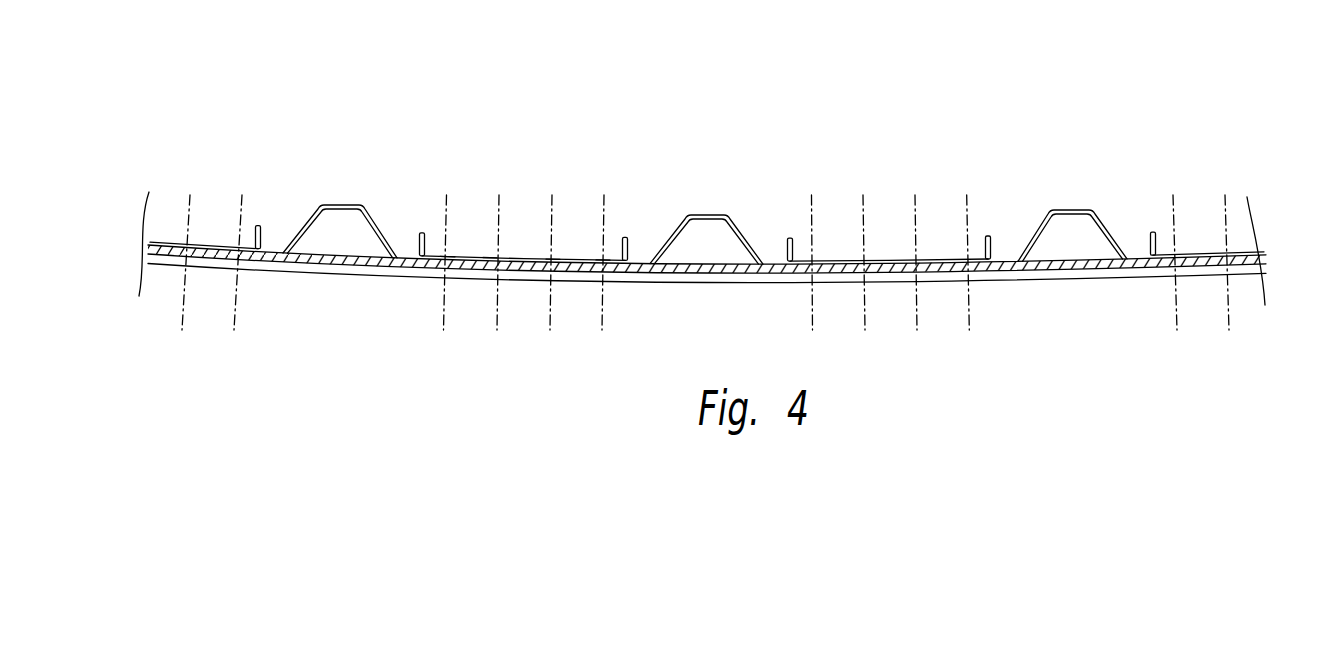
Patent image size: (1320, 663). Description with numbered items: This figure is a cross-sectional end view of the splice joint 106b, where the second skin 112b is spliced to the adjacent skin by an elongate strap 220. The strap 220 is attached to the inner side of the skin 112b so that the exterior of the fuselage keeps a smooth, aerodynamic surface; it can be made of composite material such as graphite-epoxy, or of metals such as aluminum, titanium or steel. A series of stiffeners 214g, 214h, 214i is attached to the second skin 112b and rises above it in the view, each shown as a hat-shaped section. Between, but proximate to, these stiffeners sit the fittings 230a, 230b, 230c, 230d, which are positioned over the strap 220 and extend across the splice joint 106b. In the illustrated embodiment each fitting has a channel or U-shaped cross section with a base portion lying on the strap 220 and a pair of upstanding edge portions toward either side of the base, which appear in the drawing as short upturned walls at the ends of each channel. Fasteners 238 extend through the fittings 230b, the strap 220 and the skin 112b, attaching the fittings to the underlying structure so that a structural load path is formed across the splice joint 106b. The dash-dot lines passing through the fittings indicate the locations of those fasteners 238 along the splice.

The splice joint 106b is at (388, 98).
The second skin 112b is at (1047, 277).
The stiffener 214g is at (337, 204).
The stiffener 214h is at (702, 213).
The stiffener 214i is at (1067, 210).
The elongate strap 220 is at (1262, 260).
The fitting 230a is at (208, 245).
The fitting 230b is at (520, 257).
The fitting 230c is at (887, 258).
The fitting 230d is at (1210, 253).
The fasteners 238 is at (490, 258).